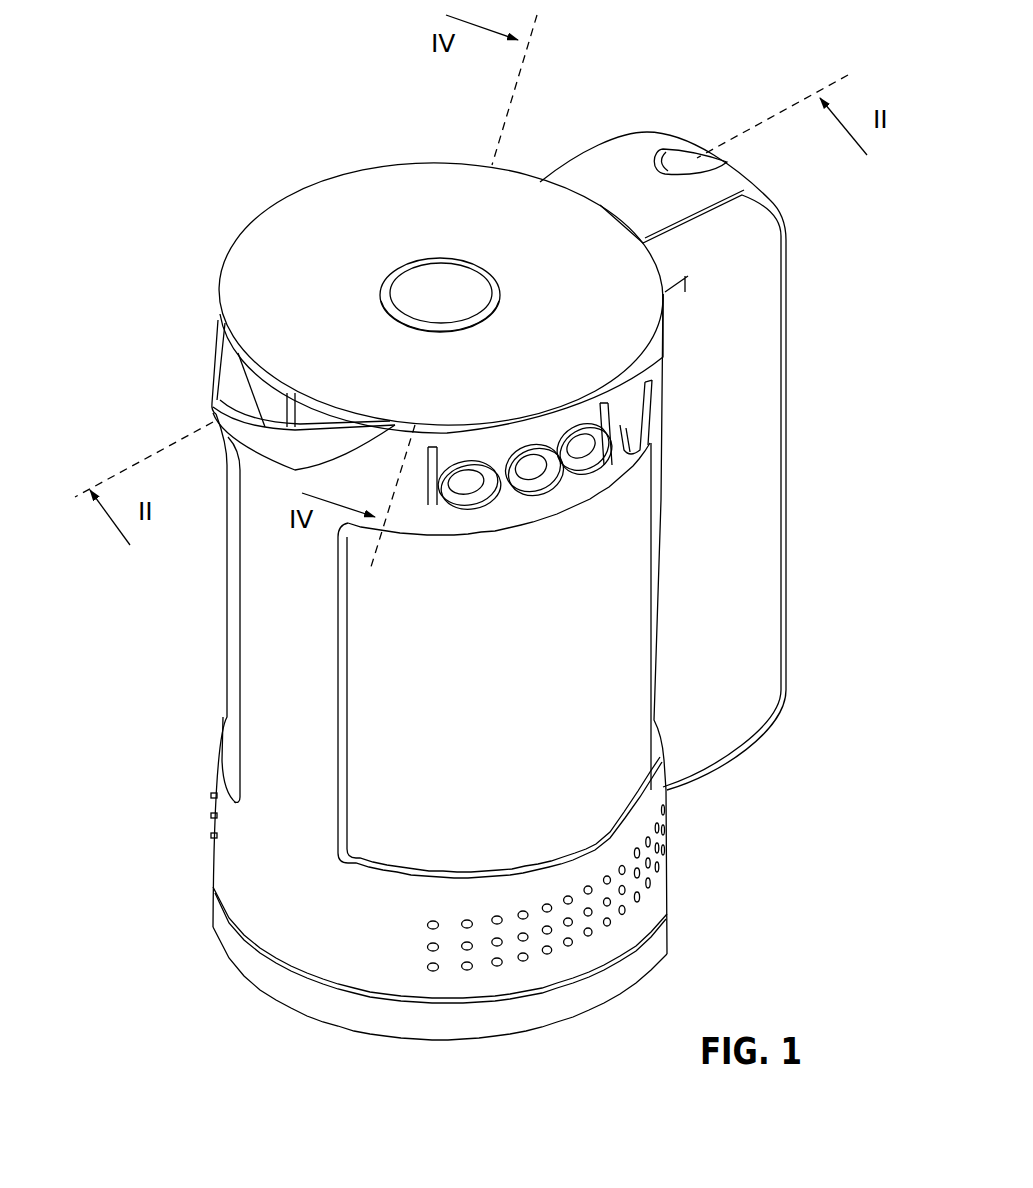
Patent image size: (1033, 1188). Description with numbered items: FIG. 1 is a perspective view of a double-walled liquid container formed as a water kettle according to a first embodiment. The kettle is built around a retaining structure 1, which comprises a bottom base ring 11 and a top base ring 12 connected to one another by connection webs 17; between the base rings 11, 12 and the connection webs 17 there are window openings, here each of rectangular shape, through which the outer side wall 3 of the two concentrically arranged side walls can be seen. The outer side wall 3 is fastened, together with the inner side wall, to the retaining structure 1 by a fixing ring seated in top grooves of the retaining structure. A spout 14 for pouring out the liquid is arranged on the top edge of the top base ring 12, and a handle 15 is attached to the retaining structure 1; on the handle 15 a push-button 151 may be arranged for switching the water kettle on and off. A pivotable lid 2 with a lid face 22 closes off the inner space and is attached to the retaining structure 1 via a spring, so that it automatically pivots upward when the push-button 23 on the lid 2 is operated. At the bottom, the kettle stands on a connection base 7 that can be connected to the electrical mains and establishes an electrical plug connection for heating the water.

The retaining structure 1 is at (203, 842).
The lid 2 is at (330, 160).
The outer side wall 3 is at (390, 701).
The connection base 7 is at (222, 963).
The bottom base ring 11 is at (622, 890).
The top base ring 12 is at (593, 432).
The spout 14 is at (237, 401).
The handle 15 is at (745, 548).
The connection webs 17 is at (292, 618).
The lid face 22 is at (300, 212).
The push-button 23 is at (417, 290).
The push-button 151 is at (683, 160).